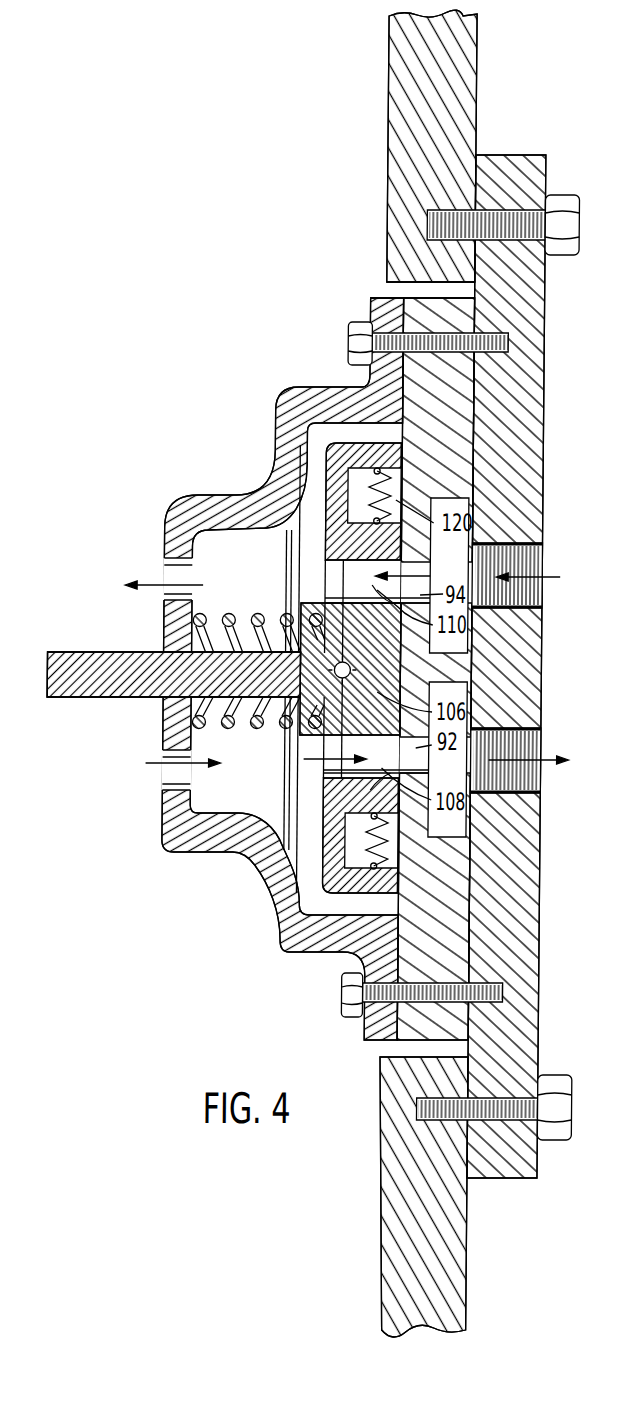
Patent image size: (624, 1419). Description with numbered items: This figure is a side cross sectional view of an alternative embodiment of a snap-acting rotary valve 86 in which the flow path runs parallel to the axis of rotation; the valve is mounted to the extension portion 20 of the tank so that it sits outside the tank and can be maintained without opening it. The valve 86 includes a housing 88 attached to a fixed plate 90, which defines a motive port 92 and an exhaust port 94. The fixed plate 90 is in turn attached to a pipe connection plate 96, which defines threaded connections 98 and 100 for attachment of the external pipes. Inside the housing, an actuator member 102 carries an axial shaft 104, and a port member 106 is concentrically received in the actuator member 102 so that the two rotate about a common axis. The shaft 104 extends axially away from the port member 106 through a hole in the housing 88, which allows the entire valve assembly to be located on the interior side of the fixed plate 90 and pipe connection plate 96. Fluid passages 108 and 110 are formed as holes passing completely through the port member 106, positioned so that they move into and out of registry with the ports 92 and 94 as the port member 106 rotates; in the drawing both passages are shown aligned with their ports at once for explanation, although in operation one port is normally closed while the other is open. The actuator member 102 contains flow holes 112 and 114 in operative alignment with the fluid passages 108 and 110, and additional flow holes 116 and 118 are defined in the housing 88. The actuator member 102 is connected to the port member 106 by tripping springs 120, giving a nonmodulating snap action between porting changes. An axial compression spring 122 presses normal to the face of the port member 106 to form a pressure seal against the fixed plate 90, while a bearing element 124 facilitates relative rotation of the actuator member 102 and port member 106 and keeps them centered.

The extension portion 20 is at (389, 170).
The valve 86 is at (172, 890).
The housing 88 is at (198, 508).
The fixed plate 90 is at (432, 293).
The motive port 92 is at (417, 748).
The exhaust port 94 is at (420, 595).
The pipe connection plate 96 is at (541, 972).
The threaded connection 98 is at (510, 777).
The threaded connection 100 is at (527, 553).
The actuator member 102 is at (337, 457).
The axial shaft 104 is at (130, 665).
The port member 106 is at (378, 692).
The fluid passage 108 is at (383, 768).
The fluid passage 110 is at (377, 590).
The flow hole 112 is at (330, 748).
The flow hole 114 is at (330, 570).
The flow hole 116 is at (172, 775).
The flow hole 118 is at (172, 566).
The tripping springs 120 is at (395, 500).
The axial compression spring 122 is at (193, 730).
The bearing element 124 is at (336, 662).